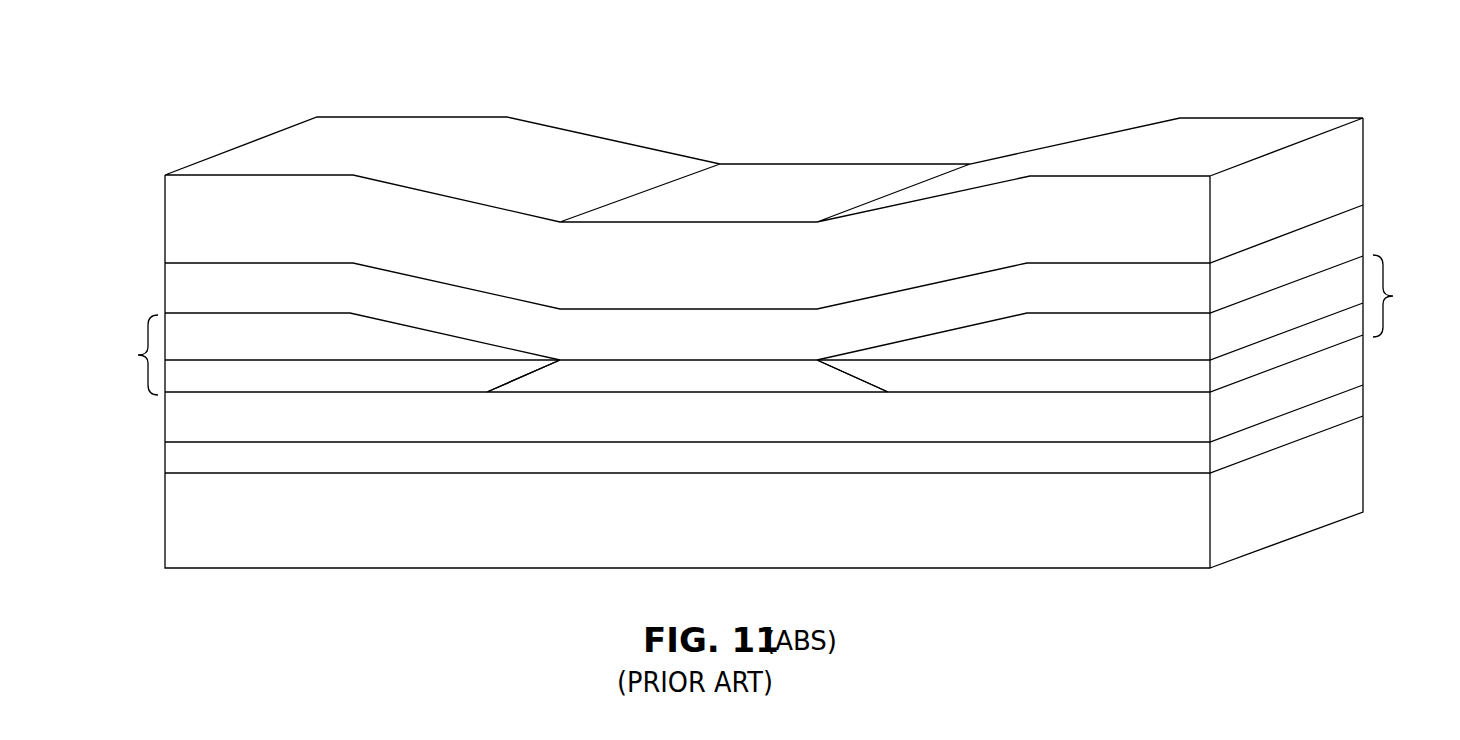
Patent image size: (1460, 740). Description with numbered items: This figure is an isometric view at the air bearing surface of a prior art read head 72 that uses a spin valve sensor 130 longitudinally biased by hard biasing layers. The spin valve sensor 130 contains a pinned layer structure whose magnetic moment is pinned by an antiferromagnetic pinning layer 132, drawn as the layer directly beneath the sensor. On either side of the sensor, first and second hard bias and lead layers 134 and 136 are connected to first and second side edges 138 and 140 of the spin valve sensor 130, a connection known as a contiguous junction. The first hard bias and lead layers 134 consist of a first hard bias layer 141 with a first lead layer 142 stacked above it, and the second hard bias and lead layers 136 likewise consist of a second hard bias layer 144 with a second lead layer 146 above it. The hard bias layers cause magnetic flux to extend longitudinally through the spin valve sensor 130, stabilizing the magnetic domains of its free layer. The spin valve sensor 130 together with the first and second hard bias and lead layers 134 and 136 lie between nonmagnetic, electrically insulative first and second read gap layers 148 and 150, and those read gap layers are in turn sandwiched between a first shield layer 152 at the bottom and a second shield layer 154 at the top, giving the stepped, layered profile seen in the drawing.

The read head 72 is at (842, 137).
The second shield layer 154 is at (618, 152).
The second read gap layer 150 is at (418, 295).
The spin valve sensor 130 is at (597, 358).
The first lead layer 142 is at (209, 327).
The second lead layer 146 is at (1159, 327).
The first hard bias layer 141 is at (208, 378).
The second hard bias layer 144 is at (1160, 378).
The first side edge 138 is at (508, 382).
The second side edge 140 is at (870, 382).
The antiferromagnetic pinning layer 132 is at (888, 422).
The first read gap layer 148 is at (460, 463).
The first shield layer 152 is at (342, 547).
The first hard bias and lead layers 134 is at (121, 355).
The second hard bias and lead layers 136 is at (1408, 296).